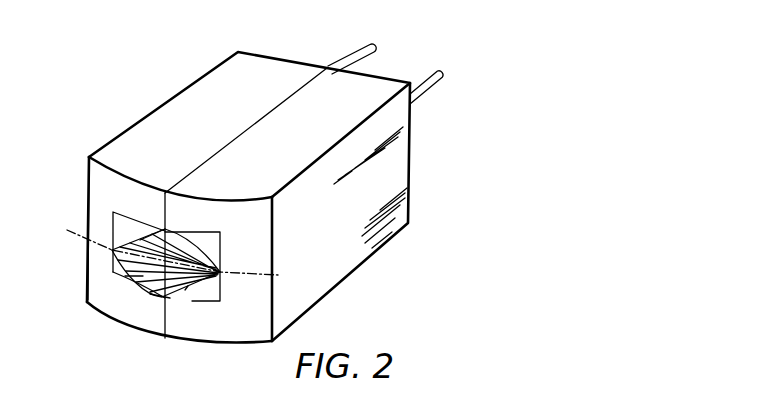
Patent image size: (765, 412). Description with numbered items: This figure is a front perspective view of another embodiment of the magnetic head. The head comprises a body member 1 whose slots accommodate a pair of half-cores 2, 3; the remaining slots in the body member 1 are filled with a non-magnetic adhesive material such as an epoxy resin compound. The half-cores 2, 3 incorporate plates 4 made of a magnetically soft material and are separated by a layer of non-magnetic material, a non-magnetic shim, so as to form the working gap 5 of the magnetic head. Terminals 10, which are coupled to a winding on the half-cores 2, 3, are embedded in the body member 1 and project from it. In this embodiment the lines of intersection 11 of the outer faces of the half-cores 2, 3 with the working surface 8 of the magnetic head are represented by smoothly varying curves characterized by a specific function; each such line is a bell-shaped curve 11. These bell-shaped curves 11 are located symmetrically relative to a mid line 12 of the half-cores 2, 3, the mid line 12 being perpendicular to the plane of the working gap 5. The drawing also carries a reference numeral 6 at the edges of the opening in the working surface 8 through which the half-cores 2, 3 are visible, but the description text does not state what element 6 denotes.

The body member 1 is at (324, 86).
The half-core 2 is at (141, 277).
The half-core 3 is at (193, 274).
The plates 4 is at (172, 236).
The working gap 5 is at (158, 298).
The window edges 6 is at (112, 272).
The working surface 8 is at (98, 178).
The terminals 10 is at (372, 58).
The bell-shaped curve 11 is at (141, 284).
The mid line 12 is at (233, 272).